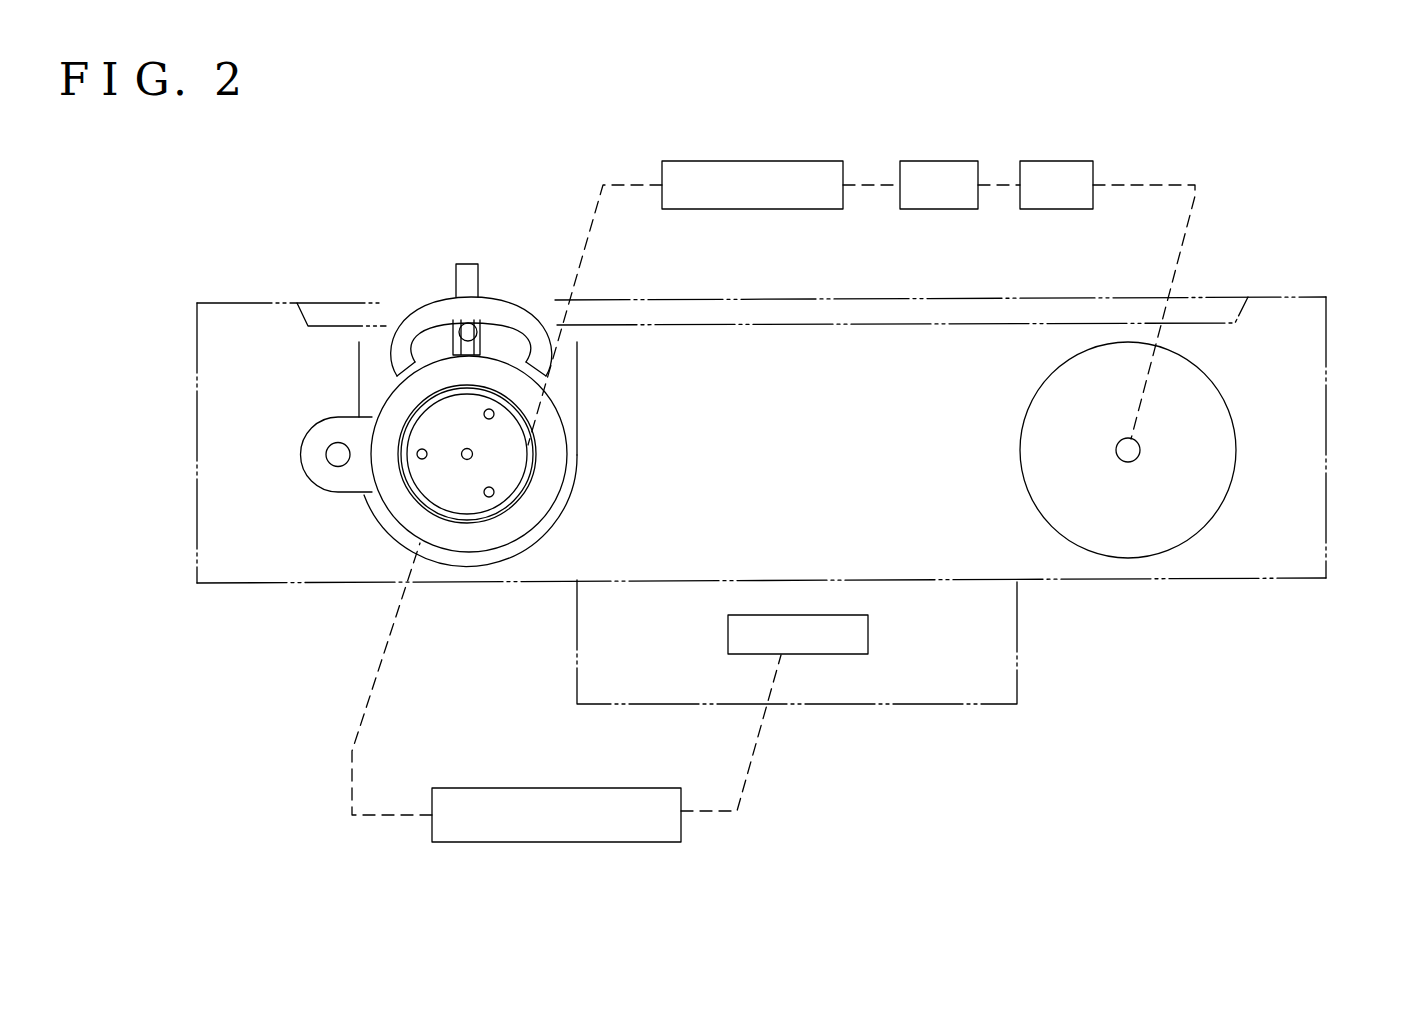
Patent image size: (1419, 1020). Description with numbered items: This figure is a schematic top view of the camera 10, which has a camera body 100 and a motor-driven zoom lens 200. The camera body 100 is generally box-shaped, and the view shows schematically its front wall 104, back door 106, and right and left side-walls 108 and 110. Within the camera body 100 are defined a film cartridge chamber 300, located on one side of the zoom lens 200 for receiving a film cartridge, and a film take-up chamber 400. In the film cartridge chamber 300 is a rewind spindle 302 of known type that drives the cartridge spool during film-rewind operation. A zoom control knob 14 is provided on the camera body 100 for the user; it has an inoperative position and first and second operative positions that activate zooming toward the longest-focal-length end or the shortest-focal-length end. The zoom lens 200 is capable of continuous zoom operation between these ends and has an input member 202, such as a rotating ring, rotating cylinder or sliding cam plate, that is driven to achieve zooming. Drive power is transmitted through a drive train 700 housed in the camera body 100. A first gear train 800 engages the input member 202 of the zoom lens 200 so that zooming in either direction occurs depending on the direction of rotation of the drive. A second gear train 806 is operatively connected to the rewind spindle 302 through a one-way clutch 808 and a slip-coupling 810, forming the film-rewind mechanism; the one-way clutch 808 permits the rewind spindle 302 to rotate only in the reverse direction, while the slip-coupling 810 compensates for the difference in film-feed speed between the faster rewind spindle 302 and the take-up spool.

The camera 10 is at (1267, 180).
The zoom control knob 14 is at (505, 283).
The camera body 100 is at (1287, 318).
The front wall 104 is at (1278, 578).
The back door 106 is at (963, 306).
The right side-wall 108 is at (197, 430).
The left side-wall 110 is at (1326, 430).
The motor-driven zoom lens 200 is at (995, 680).
The input member 202 is at (823, 656).
The film cartridge chamber 300 is at (1052, 508).
The rewind spindle 302 is at (1137, 463).
The film take-up chamber 400 is at (563, 388).
The drive train 700 is at (426, 572).
The first gear train 800 is at (561, 844).
The second gear train 806 is at (810, 161).
The one-way clutch 808 is at (958, 161).
The slip-coupling 810 is at (1068, 161).